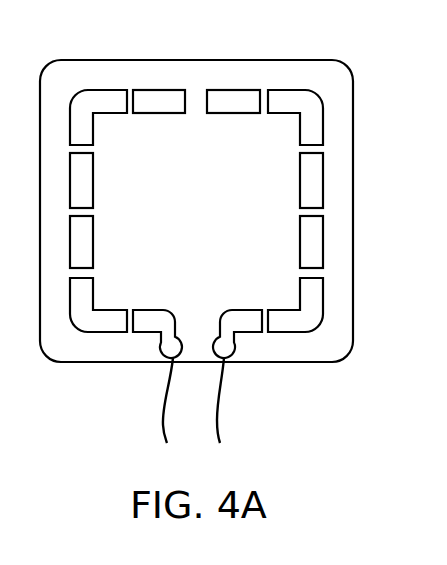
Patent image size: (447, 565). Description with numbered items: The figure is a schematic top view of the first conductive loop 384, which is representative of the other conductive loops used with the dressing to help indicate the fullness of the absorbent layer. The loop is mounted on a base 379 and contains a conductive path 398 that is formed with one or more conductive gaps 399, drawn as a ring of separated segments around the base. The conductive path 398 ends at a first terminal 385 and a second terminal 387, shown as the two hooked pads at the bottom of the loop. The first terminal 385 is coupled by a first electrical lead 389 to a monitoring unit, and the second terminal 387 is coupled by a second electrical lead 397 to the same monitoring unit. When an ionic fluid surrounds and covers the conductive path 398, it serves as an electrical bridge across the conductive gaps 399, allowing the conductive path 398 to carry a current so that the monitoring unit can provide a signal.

The base 379 is at (312, 60).
The first conductive loop 384 is at (82, 60).
The first terminal 385 is at (158, 345).
The second terminal 387 is at (236, 344).
The first electrical lead 389 is at (163, 432).
The second electrical lead 397 is at (218, 408).
The conductive path 398 is at (156, 100).
The conductive gaps 399 is at (195, 92).